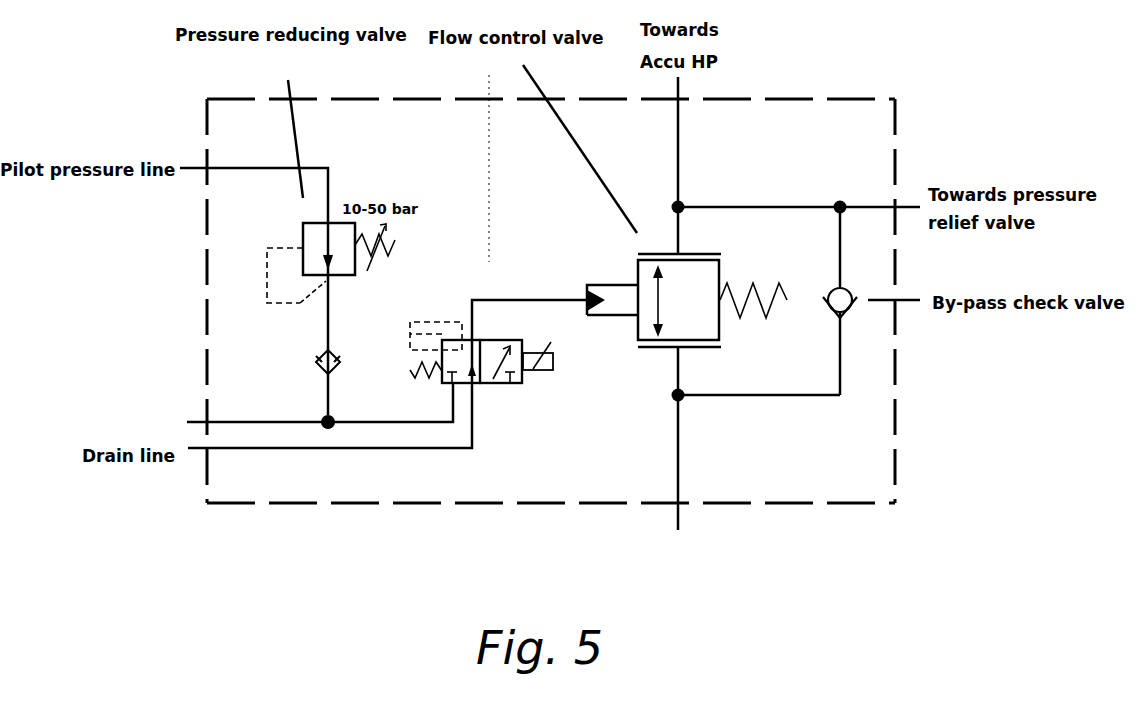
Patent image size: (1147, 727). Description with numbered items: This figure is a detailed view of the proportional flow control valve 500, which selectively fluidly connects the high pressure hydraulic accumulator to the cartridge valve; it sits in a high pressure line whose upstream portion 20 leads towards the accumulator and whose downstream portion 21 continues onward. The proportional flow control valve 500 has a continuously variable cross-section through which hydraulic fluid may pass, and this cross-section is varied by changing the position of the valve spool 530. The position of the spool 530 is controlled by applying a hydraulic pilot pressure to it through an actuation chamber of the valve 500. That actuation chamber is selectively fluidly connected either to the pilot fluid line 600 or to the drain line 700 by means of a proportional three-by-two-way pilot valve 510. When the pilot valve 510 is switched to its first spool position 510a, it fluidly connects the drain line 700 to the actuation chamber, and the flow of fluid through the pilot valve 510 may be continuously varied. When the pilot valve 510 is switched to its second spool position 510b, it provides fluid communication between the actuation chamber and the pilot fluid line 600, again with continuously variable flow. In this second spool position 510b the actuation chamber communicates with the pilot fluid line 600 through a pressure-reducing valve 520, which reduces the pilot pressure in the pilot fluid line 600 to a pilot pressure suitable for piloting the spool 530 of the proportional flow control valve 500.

The high pressure line towards accumulator 20 is at (681, 165).
The high pressure line 21 is at (681, 468).
The proportional flow control valve 500 is at (643, 367).
The proportional 3/2-way pilot valve 510 is at (487, 364).
The first spool position 510a is at (452, 345).
The second spool position 510b is at (497, 338).
The pressure-reducing valve 520 is at (312, 306).
The valve spool 530 is at (602, 289).
The pilot fluid line 600 is at (258, 172).
The drain line 700 is at (287, 450).